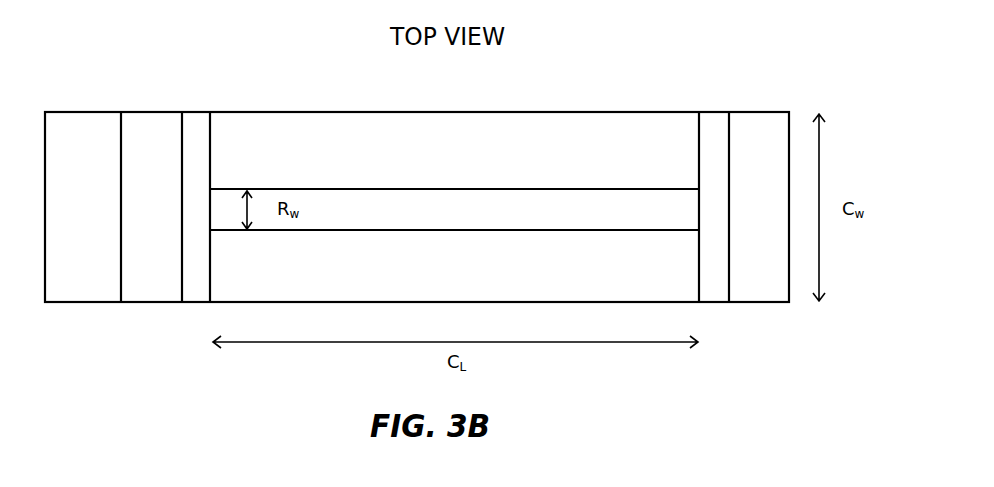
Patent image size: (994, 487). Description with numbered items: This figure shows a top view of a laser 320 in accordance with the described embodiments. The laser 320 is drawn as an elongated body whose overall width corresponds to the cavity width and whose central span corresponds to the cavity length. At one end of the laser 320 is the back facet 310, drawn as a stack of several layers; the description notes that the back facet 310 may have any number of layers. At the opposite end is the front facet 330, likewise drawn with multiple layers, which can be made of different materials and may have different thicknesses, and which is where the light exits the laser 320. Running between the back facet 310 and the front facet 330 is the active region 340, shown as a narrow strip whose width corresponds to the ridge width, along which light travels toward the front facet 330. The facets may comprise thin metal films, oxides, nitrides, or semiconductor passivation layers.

The back facet 310 is at (211, 97).
The laser 320 is at (349, 112).
The front facet 330 is at (790, 84).
The active region 340 is at (411, 189).